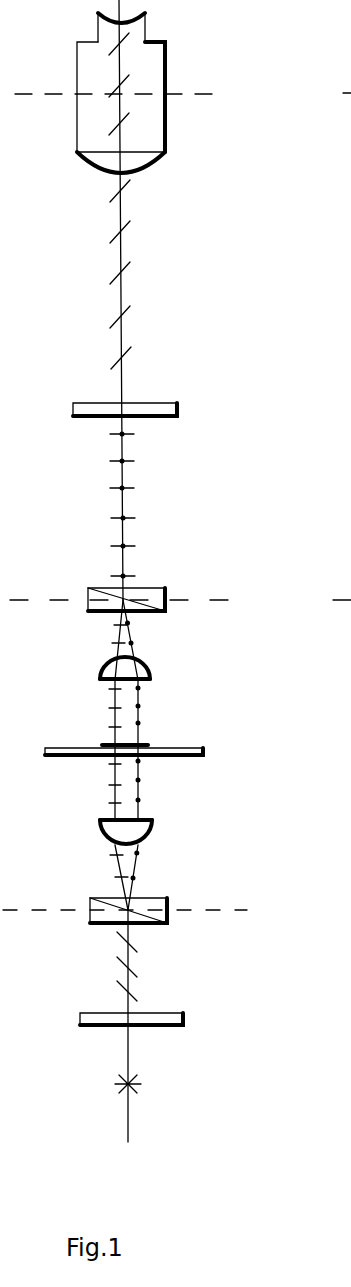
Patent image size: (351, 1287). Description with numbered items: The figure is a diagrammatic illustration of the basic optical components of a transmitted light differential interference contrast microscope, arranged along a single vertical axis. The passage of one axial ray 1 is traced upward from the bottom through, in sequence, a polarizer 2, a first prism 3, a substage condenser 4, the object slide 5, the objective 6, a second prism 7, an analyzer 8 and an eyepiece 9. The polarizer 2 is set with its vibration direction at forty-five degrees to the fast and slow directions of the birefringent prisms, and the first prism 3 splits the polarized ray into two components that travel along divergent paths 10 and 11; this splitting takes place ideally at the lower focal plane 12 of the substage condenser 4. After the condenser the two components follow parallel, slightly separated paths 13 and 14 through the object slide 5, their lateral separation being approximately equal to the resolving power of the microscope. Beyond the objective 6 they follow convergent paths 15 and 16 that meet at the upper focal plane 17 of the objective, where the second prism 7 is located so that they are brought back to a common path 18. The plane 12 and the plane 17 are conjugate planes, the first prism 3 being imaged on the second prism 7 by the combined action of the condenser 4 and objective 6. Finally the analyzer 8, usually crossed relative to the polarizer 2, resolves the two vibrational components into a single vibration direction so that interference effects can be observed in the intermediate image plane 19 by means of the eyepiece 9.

The axial ray 1 is at (141, 1083).
The polarizer 2 is at (143, 1019).
The first prism 3 is at (157, 923).
The substage condenser 4 is at (136, 831).
The object slide 5 is at (135, 753).
The objective 6 is at (136, 672).
The second prism 7 is at (160, 610).
The analyzer 8 is at (137, 408).
The eyepiece 9 is at (167, 51).
The ray path 10 is at (117, 868).
The ray path 11 is at (138, 867).
The lower focal plane 12 is at (139, 911).
The ray path 13 is at (113, 773).
The ray path 14 is at (140, 787).
The convergent path 15 is at (118, 642).
The convergent path 16 is at (133, 641).
The upper focal plane 17 is at (180, 601).
The common path 18 is at (123, 523).
The intermediate image plane 19 is at (183, 94).